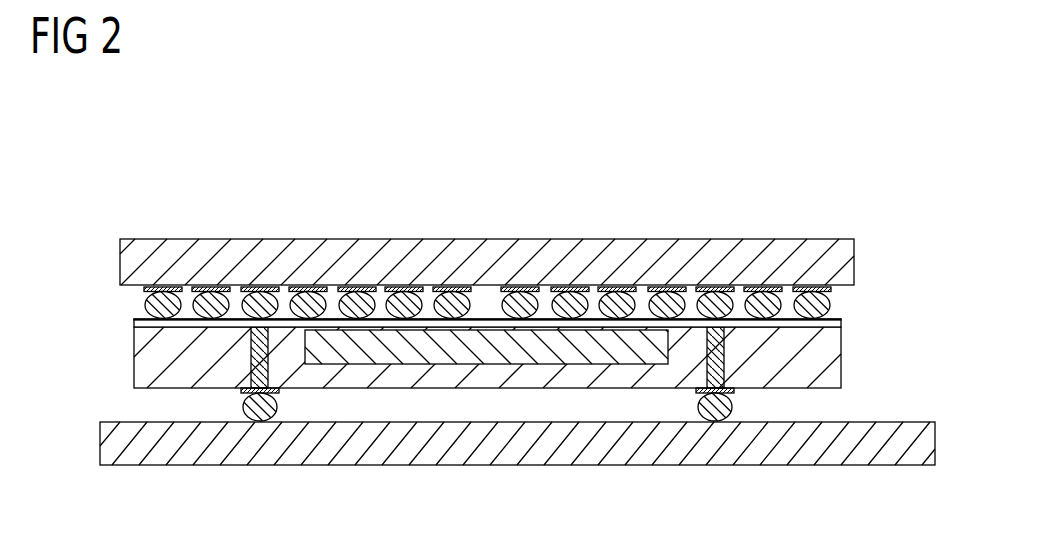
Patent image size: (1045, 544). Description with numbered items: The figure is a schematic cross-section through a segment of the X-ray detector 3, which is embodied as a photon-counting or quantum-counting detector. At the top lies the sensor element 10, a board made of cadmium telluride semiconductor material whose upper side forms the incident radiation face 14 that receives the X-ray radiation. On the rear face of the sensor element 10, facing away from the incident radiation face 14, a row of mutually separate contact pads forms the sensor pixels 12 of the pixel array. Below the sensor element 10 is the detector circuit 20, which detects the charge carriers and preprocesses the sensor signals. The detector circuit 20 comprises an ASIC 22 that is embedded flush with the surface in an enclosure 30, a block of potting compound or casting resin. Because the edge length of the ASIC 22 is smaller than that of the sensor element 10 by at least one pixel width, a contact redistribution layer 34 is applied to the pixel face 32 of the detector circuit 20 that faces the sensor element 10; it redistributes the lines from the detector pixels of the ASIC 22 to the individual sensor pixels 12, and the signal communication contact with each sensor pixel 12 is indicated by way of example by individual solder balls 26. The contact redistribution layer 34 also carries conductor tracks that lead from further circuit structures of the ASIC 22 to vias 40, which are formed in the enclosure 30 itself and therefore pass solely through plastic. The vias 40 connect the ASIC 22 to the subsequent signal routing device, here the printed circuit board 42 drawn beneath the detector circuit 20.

The X-ray detector 3 is at (800, 99).
The sensor element 10 is at (208, 239).
The sensor pixels 12 is at (267, 288).
The incident radiation face 14 is at (631, 125).
The detector circuit 20 is at (878, 358).
The ASIC 22 is at (387, 357).
The solder balls 26 is at (482, 296).
The enclosure 30 is at (137, 373).
The pixel face 32 is at (127, 304).
The contact redistribution layer 34 is at (134, 324).
The vias 40 is at (261, 362).
The printed circuit board 42 is at (105, 453).